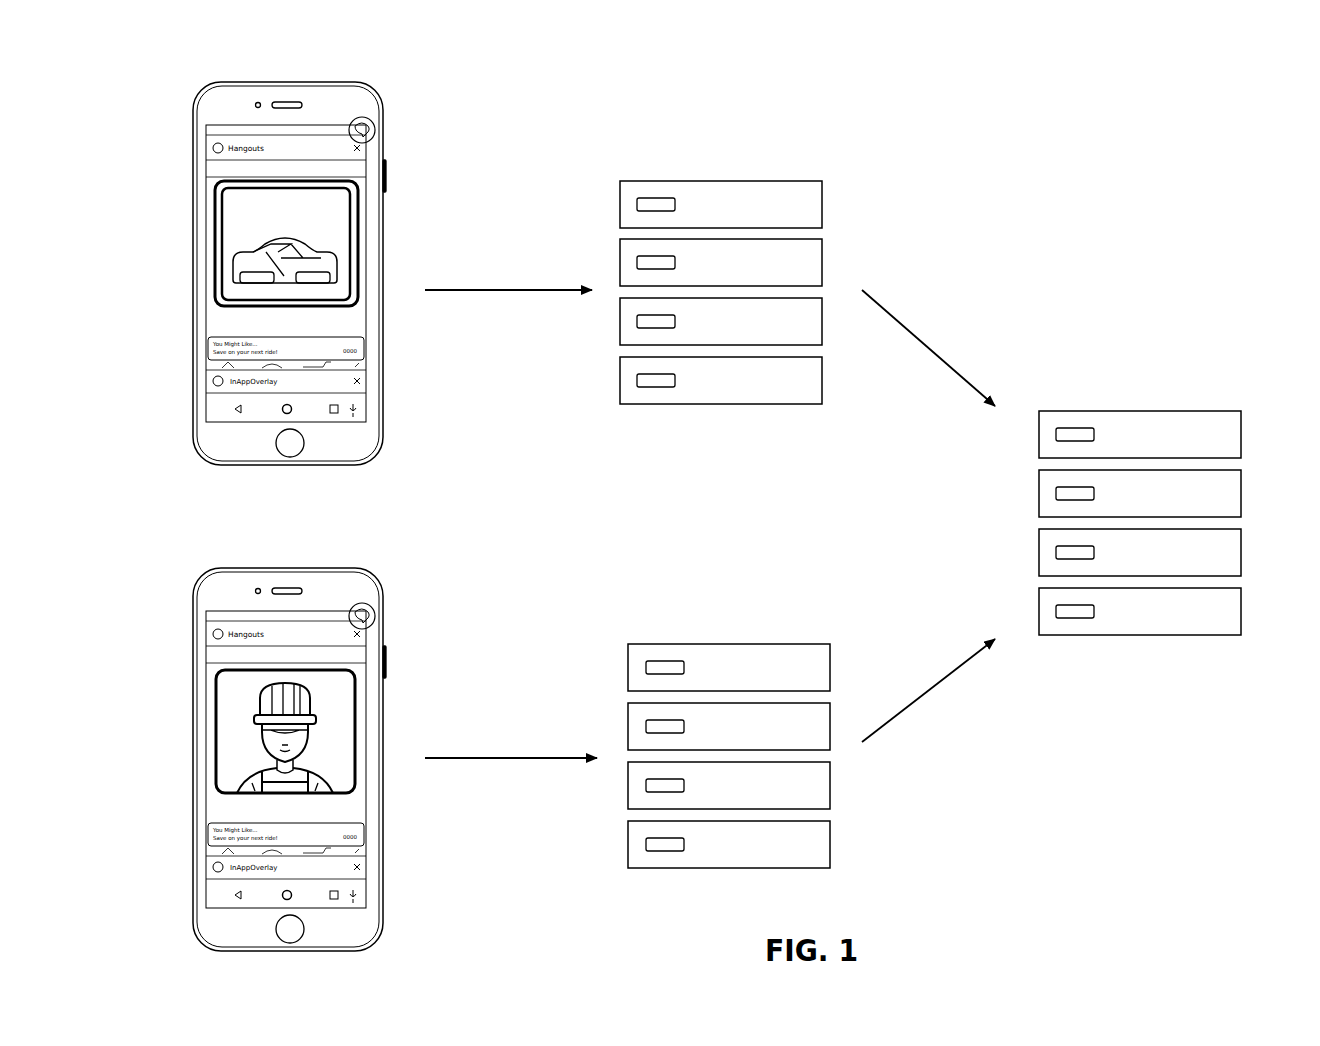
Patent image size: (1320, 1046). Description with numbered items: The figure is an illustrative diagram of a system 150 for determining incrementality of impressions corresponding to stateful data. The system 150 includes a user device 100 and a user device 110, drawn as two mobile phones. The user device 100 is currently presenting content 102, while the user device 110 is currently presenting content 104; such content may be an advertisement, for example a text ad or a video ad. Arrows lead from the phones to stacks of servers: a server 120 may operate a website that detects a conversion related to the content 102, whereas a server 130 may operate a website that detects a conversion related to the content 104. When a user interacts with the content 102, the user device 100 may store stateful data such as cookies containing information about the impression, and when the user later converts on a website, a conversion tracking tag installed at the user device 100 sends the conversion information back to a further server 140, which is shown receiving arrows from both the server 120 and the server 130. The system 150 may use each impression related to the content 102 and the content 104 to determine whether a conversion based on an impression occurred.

The user device 100 is at (310, 63).
The content 102 is at (255, 205).
The user device 110 is at (310, 556).
The content 104 is at (238, 708).
The server 120 is at (748, 145).
The server 130 is at (748, 602).
The server 140 is at (1159, 383).
The system 150 is at (824, 63).